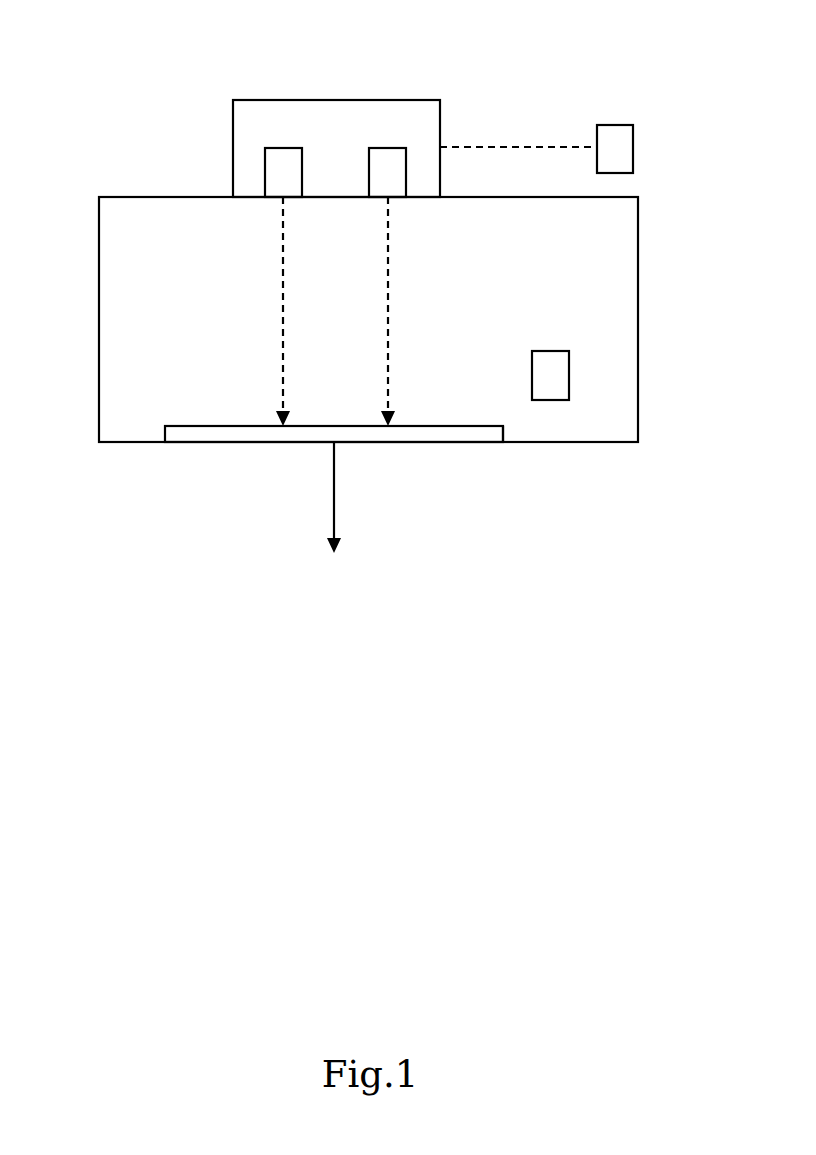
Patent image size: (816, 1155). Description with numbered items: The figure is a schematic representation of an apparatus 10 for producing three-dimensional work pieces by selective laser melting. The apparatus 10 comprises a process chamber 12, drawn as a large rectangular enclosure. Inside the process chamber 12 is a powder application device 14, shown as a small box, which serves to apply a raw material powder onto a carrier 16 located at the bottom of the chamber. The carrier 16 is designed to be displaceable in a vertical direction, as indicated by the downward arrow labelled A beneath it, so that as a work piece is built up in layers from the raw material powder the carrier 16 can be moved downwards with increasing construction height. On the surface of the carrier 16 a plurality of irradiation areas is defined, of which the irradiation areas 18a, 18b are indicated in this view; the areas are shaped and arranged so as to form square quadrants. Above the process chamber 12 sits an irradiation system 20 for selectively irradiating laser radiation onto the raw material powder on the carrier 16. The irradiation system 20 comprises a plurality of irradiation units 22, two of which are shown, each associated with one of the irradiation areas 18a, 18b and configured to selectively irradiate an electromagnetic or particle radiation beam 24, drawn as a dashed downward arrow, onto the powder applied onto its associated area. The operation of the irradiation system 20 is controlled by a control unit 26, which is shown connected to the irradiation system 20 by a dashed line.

The apparatus 10 is at (505, 82).
The process chamber 12 is at (639, 305).
The powder application device 14 is at (551, 351).
The carrier 16 is at (412, 416).
The irradiation area 18a is at (226, 426).
The irradiation area 18b is at (452, 426).
The irradiation system 20 is at (441, 110).
The irradiation unit 22 is at (286, 148).
The radiation beam 24 is at (388, 330).
The control unit 26 is at (613, 125).